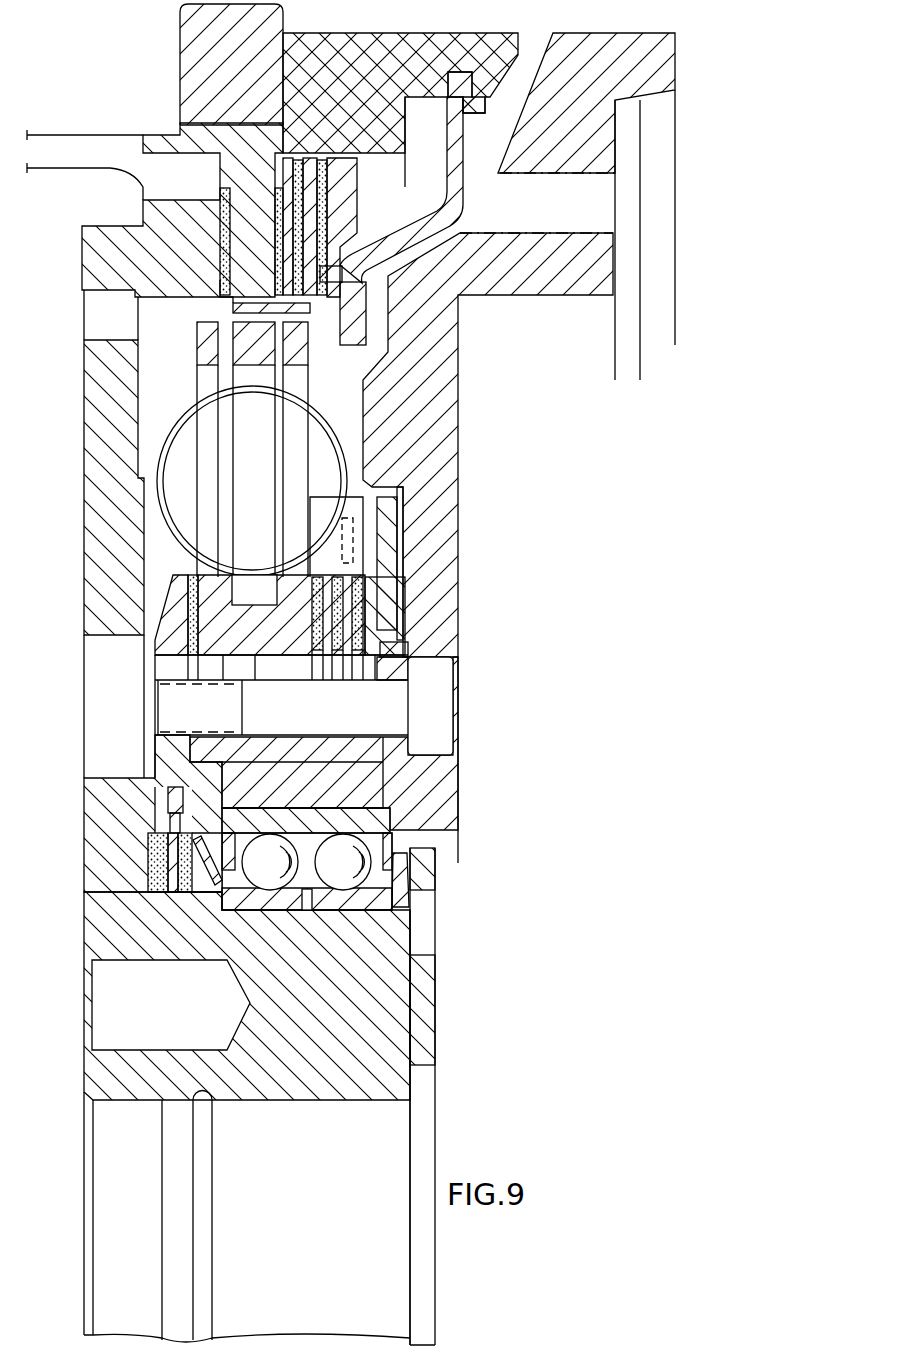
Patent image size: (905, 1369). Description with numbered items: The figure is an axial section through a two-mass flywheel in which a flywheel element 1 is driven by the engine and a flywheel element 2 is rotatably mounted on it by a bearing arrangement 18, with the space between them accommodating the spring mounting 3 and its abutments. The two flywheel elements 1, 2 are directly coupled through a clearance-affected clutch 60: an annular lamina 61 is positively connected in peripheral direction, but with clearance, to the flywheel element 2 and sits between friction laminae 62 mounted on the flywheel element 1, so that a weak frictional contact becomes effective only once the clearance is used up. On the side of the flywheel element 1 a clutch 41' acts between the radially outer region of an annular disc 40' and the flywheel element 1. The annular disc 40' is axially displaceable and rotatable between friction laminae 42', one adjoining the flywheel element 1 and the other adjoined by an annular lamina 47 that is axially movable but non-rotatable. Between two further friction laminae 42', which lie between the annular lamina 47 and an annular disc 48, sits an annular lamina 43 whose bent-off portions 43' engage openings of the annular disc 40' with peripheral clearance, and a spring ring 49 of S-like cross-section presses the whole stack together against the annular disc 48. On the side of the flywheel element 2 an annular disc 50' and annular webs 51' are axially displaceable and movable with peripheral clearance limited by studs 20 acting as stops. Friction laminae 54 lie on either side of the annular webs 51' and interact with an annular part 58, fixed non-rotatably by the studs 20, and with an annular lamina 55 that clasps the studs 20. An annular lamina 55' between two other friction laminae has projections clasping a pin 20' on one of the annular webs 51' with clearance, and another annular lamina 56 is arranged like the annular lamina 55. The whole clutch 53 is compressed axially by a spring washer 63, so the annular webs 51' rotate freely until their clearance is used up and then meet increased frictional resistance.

The flywheel element 1 is at (100, 602).
The flywheel element 2 is at (458, 548).
The spring mounting 3 is at (327, 425).
The bearing arrangement 18 is at (395, 908).
The studs 20 is at (349, 745).
The pin 20' is at (410, 547).
The annular disc 40' is at (232, 428).
The clutch 41' is at (414, 301).
The friction laminae 42' is at (308, 150).
The annular lamina 43 is at (354, 150).
The bent-off portions 43' is at (434, 333).
The annular lamina 47 is at (286, 160).
The annular disc 48 is at (350, 163).
The spring ring 49 is at (450, 188).
The annular disc 50' is at (281, 676).
The annular webs 51' is at (252, 449).
The clutch 53 is at (356, 607).
The friction laminae 54 is at (195, 655).
The annular lamina 55 is at (353, 647).
The annular lamina 55' is at (432, 609).
The annular lamina 56 is at (395, 648).
The annular part 58 is at (160, 655).
The clutch 60 is at (148, 894).
The annular lamina 61 is at (168, 800).
The friction laminae 62 is at (152, 860).
The spring washer 63 is at (390, 535).